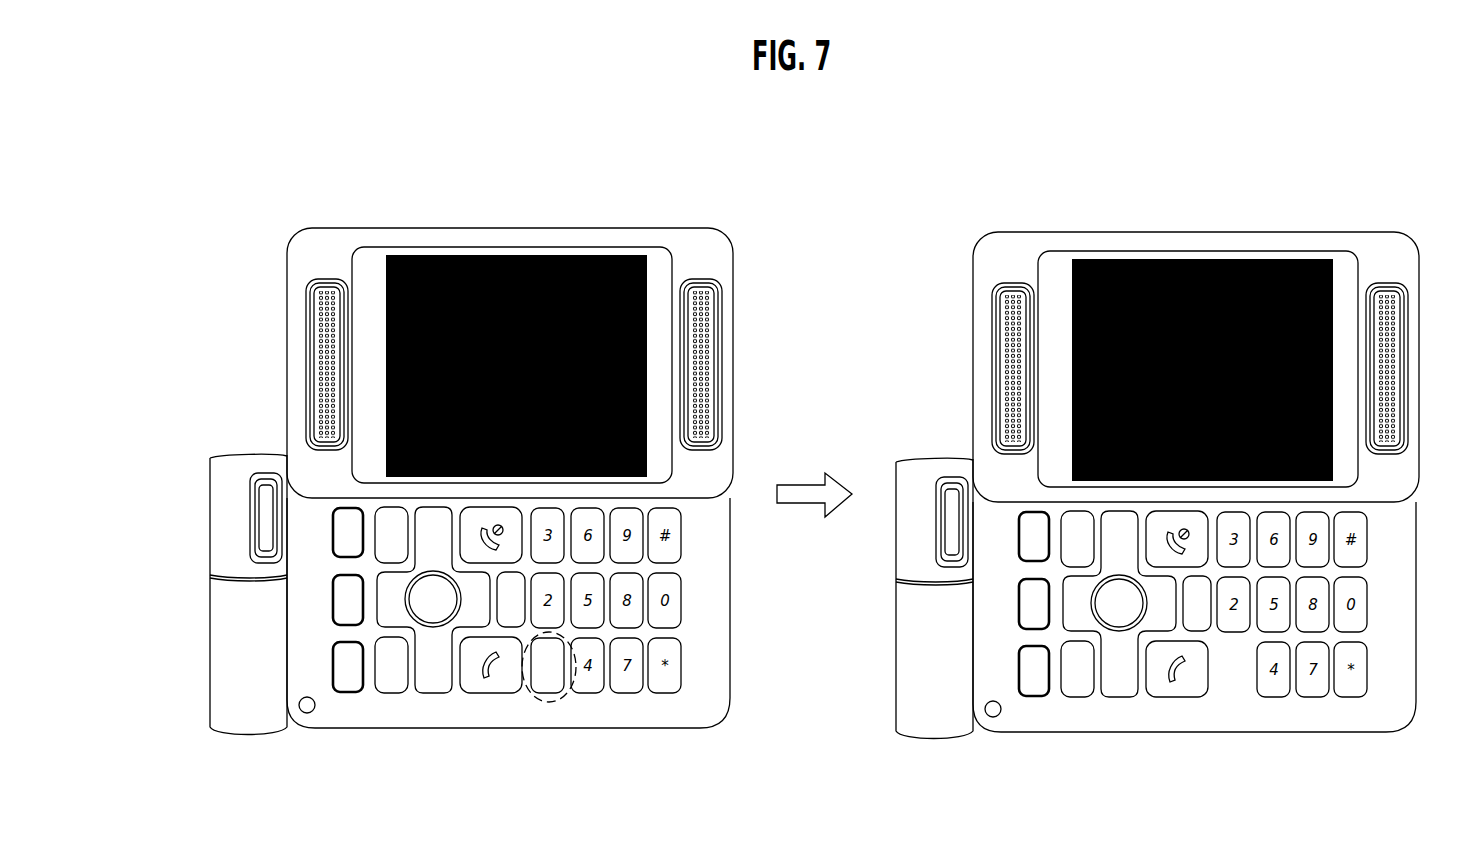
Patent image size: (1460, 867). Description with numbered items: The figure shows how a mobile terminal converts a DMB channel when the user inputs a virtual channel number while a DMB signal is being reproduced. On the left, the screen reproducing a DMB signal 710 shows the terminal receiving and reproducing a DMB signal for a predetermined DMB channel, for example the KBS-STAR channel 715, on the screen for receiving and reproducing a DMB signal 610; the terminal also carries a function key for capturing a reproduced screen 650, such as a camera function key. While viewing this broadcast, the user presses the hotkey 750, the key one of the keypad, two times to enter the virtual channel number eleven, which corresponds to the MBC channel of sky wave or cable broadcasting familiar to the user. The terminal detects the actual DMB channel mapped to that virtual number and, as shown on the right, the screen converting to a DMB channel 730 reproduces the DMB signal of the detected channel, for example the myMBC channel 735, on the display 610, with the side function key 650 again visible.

The screen reproducing a DMB signal 710 is at (463, 223).
The KBS-STAR channel 715 is at (650, 290).
The screen for receiving and reproducing a DMB signal 610 is at (386, 347).
The function key for capturing a reproduced screen 650 is at (322, 539).
The hotkey 750 is at (534, 708).
The screen converting to a DMB channel 730 is at (1159, 228).
The myMBC channel 735 is at (1334, 292).